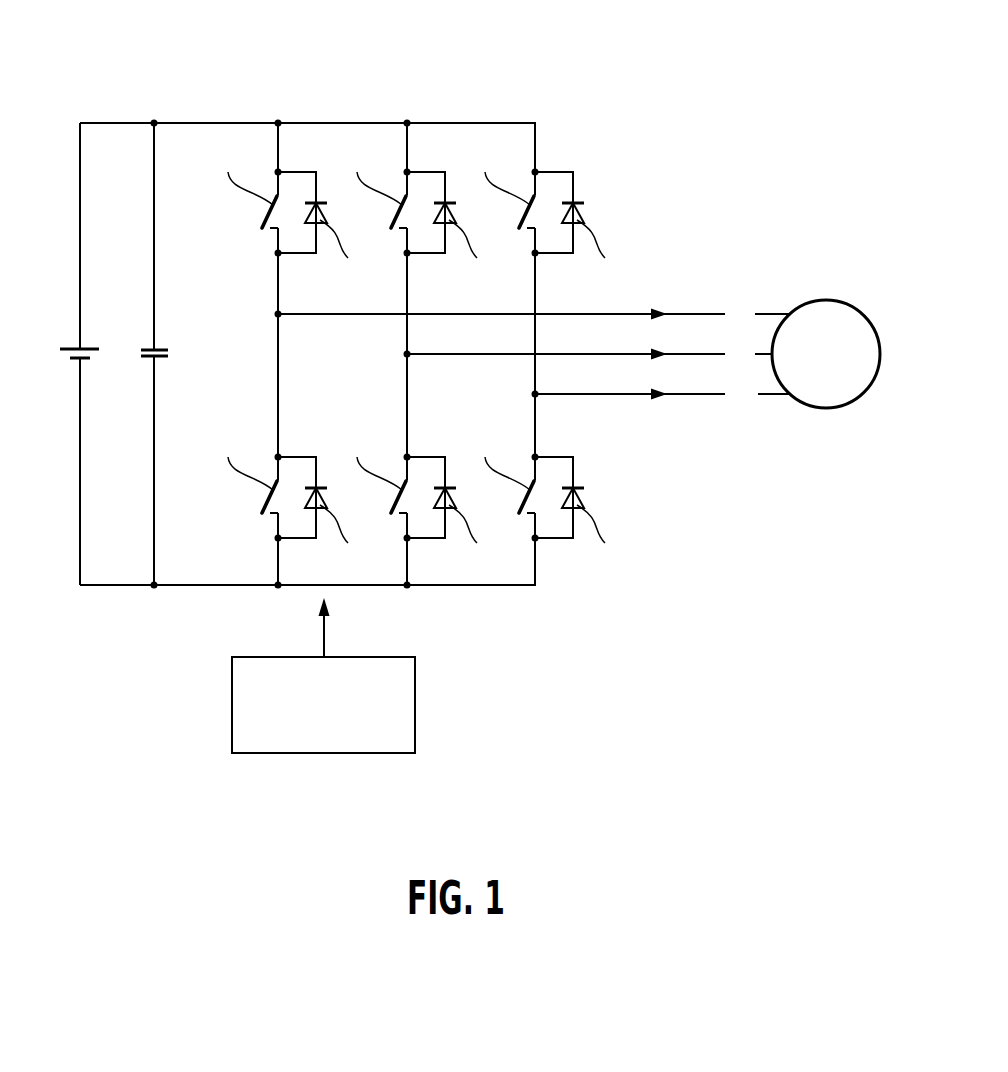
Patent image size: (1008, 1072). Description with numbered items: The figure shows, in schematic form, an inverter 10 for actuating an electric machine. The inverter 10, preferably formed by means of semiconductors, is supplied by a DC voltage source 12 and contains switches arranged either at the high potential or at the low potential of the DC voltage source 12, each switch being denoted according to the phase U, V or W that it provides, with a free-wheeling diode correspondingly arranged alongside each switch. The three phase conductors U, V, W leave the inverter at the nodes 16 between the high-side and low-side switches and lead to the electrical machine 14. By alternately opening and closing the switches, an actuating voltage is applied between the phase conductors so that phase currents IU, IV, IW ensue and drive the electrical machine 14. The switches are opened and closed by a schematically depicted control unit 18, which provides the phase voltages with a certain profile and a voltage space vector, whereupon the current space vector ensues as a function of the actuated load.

The inverter 10 is at (678, 100).
The DC voltage source 12 is at (67, 345).
The electrical machine 14 is at (827, 300).
The phase output nodes / phase lines 16 is at (277, 314).
The control unit 18 is at (323, 753).